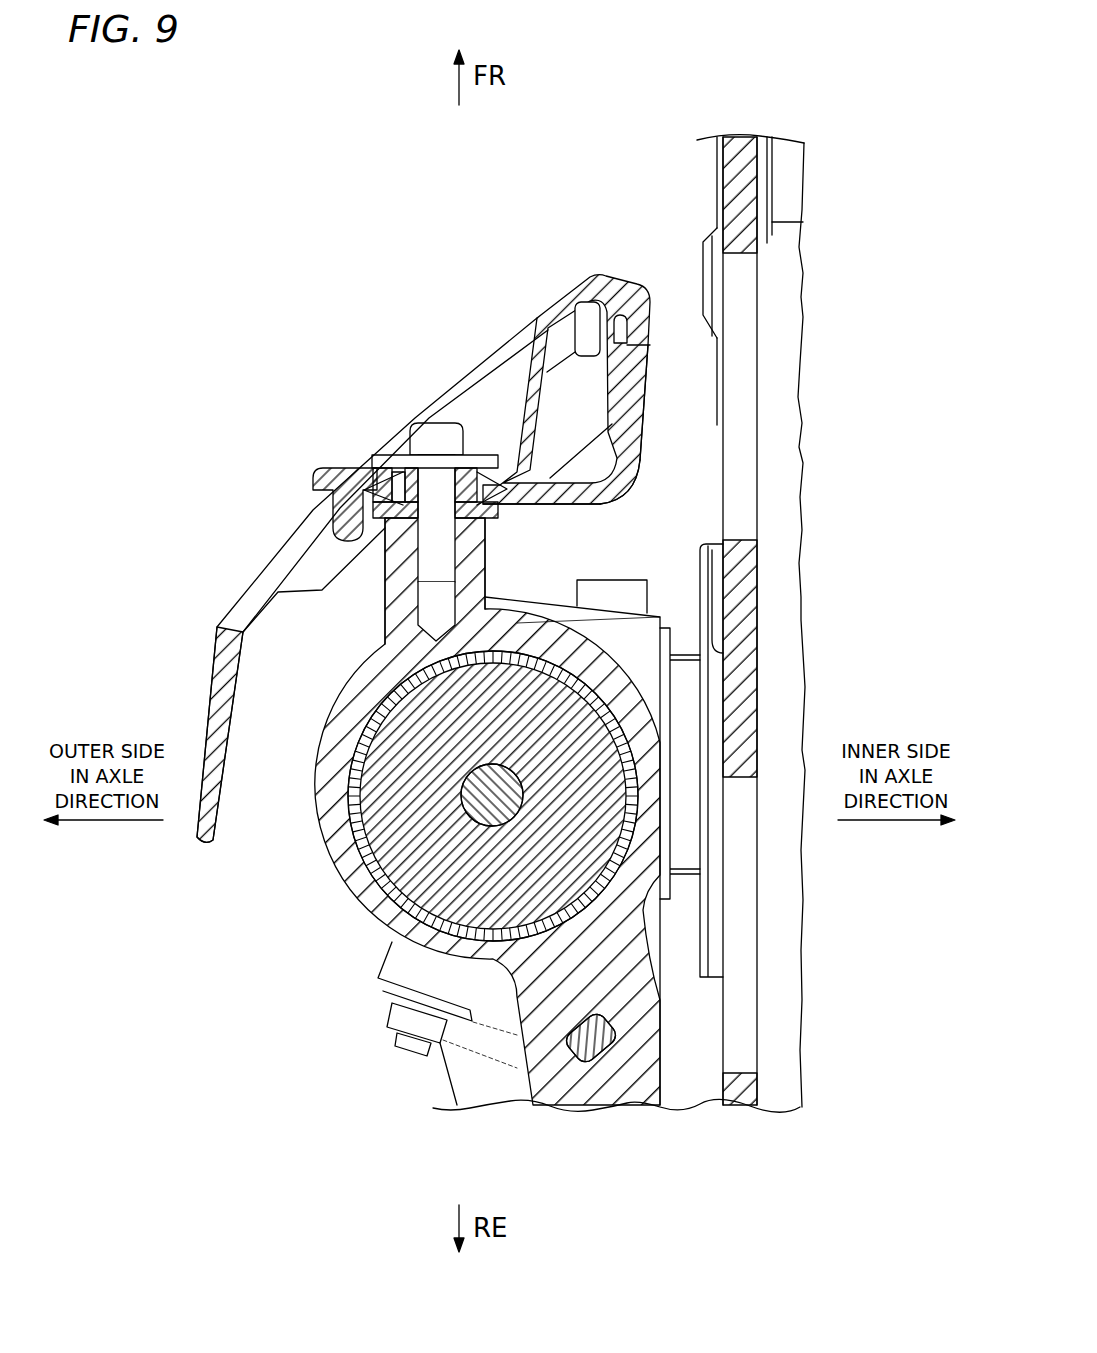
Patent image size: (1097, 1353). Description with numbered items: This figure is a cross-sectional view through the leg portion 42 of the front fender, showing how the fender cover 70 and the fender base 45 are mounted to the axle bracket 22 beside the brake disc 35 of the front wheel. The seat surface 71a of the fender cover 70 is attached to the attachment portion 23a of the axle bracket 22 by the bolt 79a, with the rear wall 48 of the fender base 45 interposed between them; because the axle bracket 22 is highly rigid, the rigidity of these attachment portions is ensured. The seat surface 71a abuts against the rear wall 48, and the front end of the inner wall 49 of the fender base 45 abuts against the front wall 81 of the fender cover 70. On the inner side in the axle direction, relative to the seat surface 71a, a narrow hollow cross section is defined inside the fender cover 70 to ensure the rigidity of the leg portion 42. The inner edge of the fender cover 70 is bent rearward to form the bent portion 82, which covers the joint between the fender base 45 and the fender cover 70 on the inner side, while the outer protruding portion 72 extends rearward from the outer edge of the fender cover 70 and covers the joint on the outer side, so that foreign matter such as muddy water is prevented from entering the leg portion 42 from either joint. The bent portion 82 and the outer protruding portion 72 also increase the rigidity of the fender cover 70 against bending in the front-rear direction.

The axle bracket 22 is at (368, 905).
The attachment portion 23a is at (388, 596).
The brake disc 35 is at (730, 1023).
The leg portion 42 is at (572, 271).
The fender base 45 is at (620, 490).
The rear wall 48 is at (533, 505).
The inner wall 49 is at (640, 403).
The fender cover 70 is at (312, 498).
The seat surface 71a is at (365, 462).
The outer protruding portion 72 is at (208, 683).
The bolt 79a is at (425, 422).
The front wall 81 is at (545, 306).
The bent portion 82 is at (652, 318).